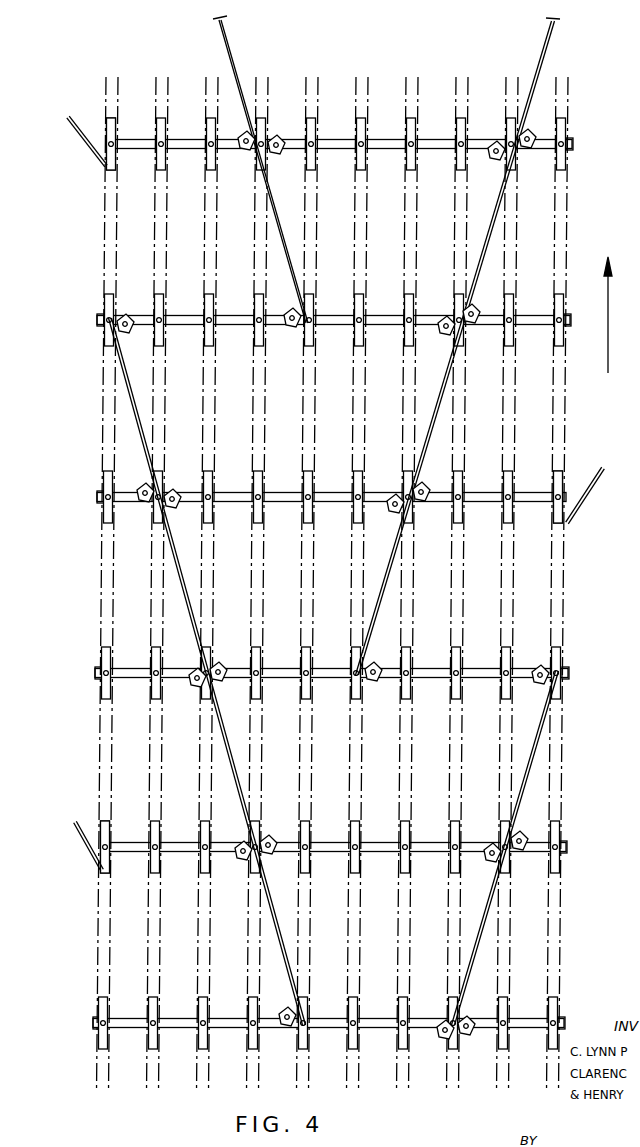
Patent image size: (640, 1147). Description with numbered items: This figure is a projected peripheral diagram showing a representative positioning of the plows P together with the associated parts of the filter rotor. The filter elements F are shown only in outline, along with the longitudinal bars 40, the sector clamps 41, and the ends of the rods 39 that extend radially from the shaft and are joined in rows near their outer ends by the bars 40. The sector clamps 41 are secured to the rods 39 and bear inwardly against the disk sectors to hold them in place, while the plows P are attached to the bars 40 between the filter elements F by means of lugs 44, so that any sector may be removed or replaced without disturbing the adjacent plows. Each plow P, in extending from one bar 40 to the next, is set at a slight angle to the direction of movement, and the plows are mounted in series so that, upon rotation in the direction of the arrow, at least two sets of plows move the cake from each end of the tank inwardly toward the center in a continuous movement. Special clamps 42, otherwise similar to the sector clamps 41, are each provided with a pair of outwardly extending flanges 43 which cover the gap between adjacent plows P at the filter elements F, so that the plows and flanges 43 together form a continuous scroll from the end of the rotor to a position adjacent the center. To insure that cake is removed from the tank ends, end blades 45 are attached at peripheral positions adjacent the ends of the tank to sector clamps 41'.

The rods 39 is at (410, 322).
The longitudinal bars 40 is at (425, 143).
The sector clamps 41 is at (332, 583).
The sector clamps 41' is at (354, 477).
The special clamps 42 is at (265, 122).
The flanges 43 is at (166, 490).
The lugs 44 is at (250, 127).
The end blades 45 is at (95, 148).
The plows P is at (500, 216).
The filter elements F is at (563, 235).